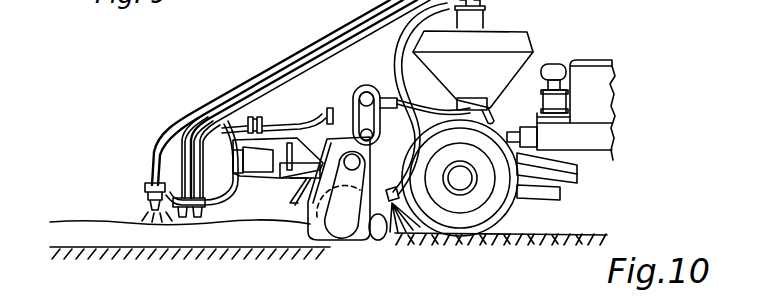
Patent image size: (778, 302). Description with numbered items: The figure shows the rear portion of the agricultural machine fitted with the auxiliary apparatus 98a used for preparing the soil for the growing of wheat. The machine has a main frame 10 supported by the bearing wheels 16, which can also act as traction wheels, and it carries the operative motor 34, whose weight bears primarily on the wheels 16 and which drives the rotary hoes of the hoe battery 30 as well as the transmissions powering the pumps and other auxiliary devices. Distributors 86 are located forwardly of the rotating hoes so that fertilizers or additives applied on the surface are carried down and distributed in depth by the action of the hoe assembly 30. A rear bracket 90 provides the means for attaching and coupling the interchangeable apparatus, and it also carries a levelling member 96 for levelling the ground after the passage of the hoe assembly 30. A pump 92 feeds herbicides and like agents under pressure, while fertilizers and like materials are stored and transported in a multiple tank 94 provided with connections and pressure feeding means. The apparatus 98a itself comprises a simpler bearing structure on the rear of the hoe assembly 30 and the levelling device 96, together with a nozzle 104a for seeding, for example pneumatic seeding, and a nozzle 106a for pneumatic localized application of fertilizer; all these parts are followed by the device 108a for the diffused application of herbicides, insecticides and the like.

The main frame 10 is at (577, 173).
The bearing wheels 16 is at (497, 213).
The hoe battery 30 is at (363, 243).
The operative motor 34 is at (603, 115).
The distributors 86 is at (397, 228).
The rear bracket 90 is at (270, 146).
The pump 92 is at (367, 90).
The multiple tank 94 is at (520, 47).
The levelling member 96 is at (275, 197).
The apparatus for preparing the soil for the growing of wheat 98a is at (177, 122).
The nozzle for seeding 104a is at (197, 218).
The nozzle for pneumatic localized application of fertilizer 106a is at (184, 218).
The device for the diffused application of herbicides 108a is at (143, 208).